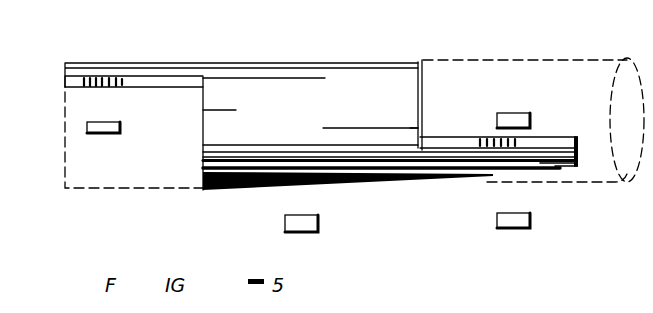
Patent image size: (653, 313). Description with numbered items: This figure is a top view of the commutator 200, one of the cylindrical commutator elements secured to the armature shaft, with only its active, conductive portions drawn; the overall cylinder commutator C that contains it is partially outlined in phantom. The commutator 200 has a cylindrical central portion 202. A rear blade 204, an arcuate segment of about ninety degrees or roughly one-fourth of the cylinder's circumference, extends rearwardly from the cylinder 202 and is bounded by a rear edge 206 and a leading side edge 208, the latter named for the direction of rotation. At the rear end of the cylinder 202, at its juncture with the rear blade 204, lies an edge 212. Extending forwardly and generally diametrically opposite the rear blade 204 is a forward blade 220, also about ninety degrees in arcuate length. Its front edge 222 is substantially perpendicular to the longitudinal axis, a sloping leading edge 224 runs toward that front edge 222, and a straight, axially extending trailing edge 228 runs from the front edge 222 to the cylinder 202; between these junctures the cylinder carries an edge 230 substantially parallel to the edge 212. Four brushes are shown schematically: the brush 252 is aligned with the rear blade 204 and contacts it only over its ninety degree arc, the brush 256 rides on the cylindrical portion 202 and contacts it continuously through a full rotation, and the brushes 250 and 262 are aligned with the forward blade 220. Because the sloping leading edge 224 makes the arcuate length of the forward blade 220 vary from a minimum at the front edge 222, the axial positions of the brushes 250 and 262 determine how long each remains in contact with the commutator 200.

The commutator 200 is at (394, 50).
The cylindrical central portion 202 is at (278, 63).
The rear blade 204 is at (117, 63).
The rear edge 206 is at (65, 77).
The leading side edge 208 is at (102, 88).
The edge 212 is at (203, 144).
The forward blade 220 is at (487, 182).
The front edge 222 is at (577, 142).
The sloping leading edge 224 is at (555, 168).
The trailing edge 228 is at (550, 143).
The edge 230 is at (423, 97).
The brush 250 is at (517, 113).
The brush 252 is at (95, 133).
The brush 256 is at (285, 220).
The brush 262 is at (530, 220).
The cylinder commutator C is at (545, 55).